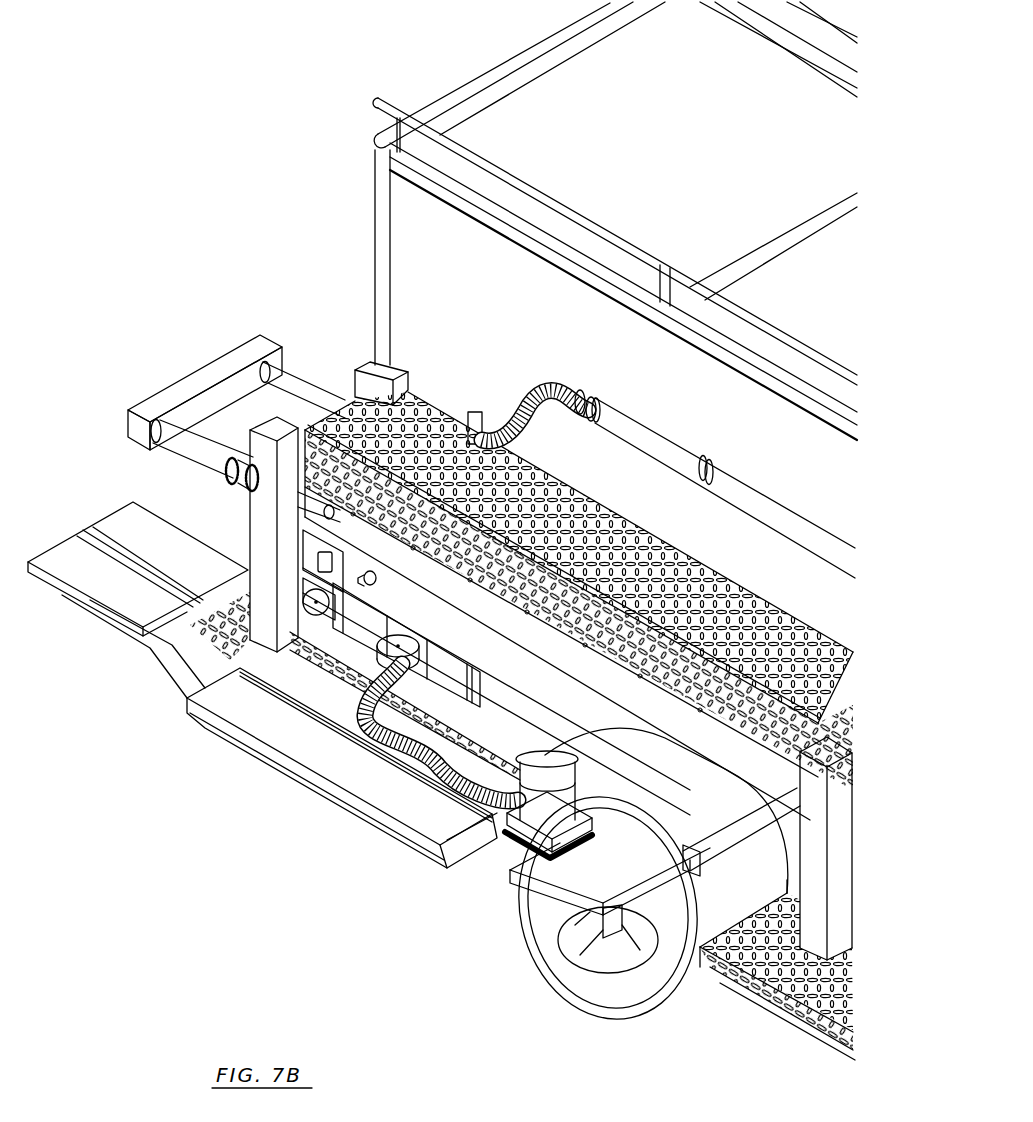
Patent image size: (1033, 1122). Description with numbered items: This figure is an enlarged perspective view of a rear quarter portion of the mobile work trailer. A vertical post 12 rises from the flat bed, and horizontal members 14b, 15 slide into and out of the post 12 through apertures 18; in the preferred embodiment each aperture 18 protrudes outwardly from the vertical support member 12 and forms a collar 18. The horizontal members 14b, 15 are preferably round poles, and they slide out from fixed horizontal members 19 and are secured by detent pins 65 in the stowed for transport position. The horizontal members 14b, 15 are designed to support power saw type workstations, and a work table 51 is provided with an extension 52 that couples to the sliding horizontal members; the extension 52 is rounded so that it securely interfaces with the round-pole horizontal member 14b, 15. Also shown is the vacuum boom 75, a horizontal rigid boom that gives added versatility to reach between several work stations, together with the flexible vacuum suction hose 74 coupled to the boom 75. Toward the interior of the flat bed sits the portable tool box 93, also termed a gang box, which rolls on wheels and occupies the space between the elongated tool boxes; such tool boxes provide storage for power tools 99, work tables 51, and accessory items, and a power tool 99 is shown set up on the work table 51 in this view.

The vertical post 12 is at (267, 503).
The horizontal member 14b is at (226, 748).
The horizontal member 15 is at (200, 372).
The aperture 18 is at (227, 463).
The fixed horizontal member 19 is at (383, 557).
The work table 51 is at (315, 760).
The extension 52 is at (678, 875).
The detent pin 65 is at (328, 512).
The flexible vacuum suction hose 74 is at (532, 387).
The vacuum boom 75 is at (672, 442).
The portable tool box 93 is at (797, 297).
The power tool 99 is at (508, 878).